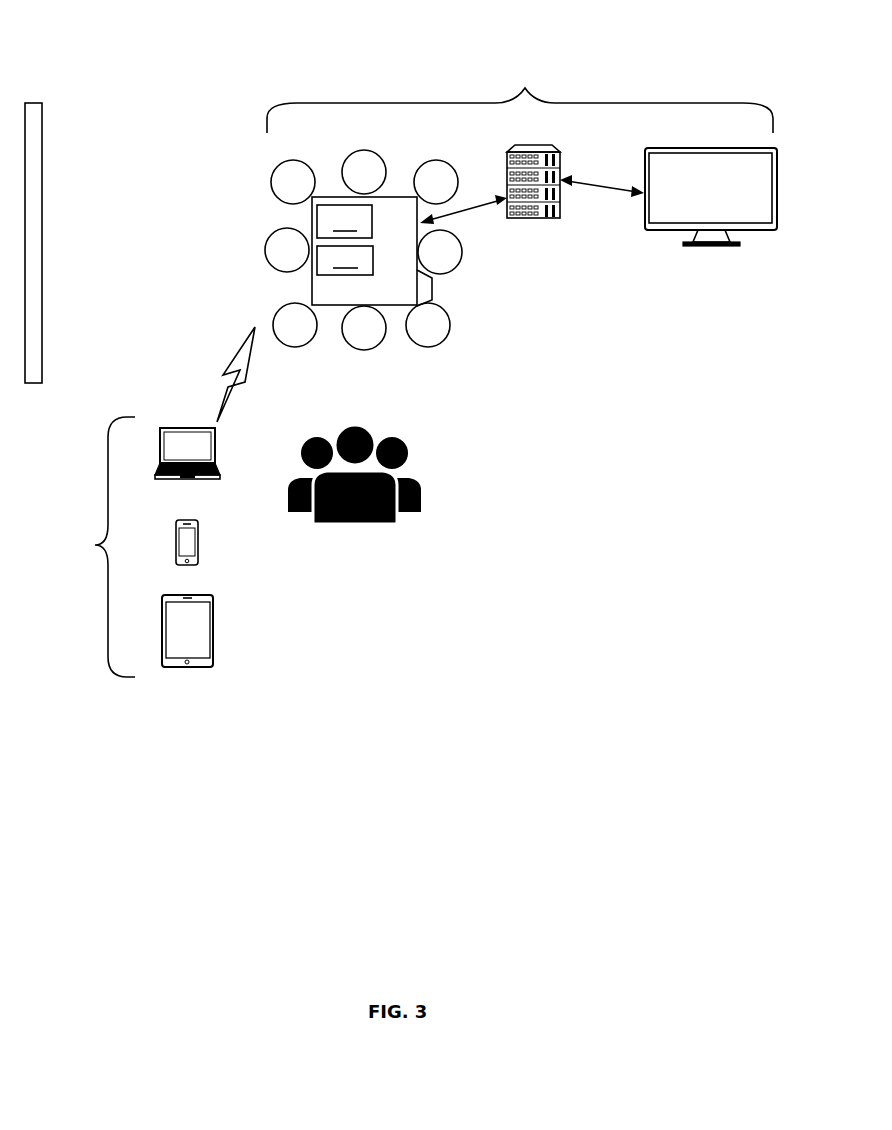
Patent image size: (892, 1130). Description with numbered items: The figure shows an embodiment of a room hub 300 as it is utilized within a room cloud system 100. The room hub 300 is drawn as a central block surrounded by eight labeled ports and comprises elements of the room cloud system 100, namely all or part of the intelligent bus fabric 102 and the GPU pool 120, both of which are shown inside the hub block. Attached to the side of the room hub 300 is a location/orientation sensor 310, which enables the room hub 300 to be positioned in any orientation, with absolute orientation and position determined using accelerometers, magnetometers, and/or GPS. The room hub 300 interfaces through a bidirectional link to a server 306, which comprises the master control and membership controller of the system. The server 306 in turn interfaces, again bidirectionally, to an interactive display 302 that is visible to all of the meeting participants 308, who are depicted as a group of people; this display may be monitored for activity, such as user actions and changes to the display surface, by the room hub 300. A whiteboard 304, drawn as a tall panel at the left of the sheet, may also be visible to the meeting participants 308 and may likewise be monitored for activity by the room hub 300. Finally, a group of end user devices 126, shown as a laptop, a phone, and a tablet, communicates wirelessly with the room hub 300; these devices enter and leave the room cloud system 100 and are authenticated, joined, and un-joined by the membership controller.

The room cloud system 100 is at (525, 88).
The room hub 300 is at (395, 145).
The intelligent bus fabric 102 is at (366, 221).
The GPU pool 120 is at (366, 260).
The location/orientation sensor 310 is at (433, 290).
The server 306 is at (560, 202).
The interactive display 302 is at (708, 247).
The whiteboard 304 is at (38, 102).
The meeting participants 308 is at (420, 492).
The end user devices 126 is at (123, 677).